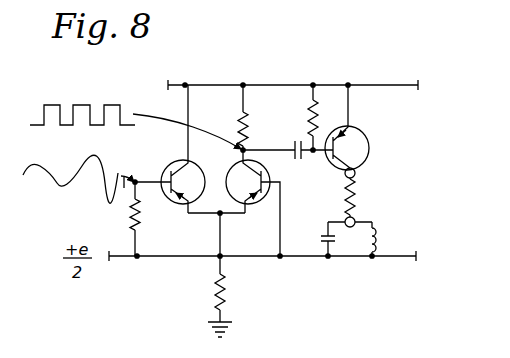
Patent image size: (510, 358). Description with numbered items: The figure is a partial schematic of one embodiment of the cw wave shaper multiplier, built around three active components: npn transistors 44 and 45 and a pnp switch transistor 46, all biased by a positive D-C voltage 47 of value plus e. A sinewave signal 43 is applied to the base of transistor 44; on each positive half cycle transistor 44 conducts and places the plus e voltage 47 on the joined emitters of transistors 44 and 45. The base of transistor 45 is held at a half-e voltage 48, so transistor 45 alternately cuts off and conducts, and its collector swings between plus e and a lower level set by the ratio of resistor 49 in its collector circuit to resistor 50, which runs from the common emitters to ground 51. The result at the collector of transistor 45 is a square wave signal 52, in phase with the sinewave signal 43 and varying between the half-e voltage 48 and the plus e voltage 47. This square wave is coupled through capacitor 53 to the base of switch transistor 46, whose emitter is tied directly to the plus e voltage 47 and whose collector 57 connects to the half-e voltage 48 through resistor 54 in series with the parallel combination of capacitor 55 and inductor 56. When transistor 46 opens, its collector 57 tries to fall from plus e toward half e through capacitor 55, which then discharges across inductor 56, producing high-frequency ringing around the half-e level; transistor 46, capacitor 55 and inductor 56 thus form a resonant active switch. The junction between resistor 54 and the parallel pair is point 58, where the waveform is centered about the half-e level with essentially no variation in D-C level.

The sinewave signal 43 is at (45, 184).
The transistor 44 is at (172, 198).
The transistor 45 is at (268, 200).
The switch transistor 46 is at (333, 160).
The positive D-C voltage 47 is at (176, 84).
The +e/2 voltage 48 is at (124, 258).
The resistor 49 is at (252, 120).
The resistor 50 is at (228, 292).
The ground 51 is at (226, 322).
The square wave signal 52 is at (78, 104).
The capacitor 53 is at (299, 163).
The resistor 54 is at (358, 197).
The capacitor 55 is at (316, 238).
The inductor 56 is at (377, 242).
The collector 57 is at (357, 171).
The point 58 is at (357, 218).